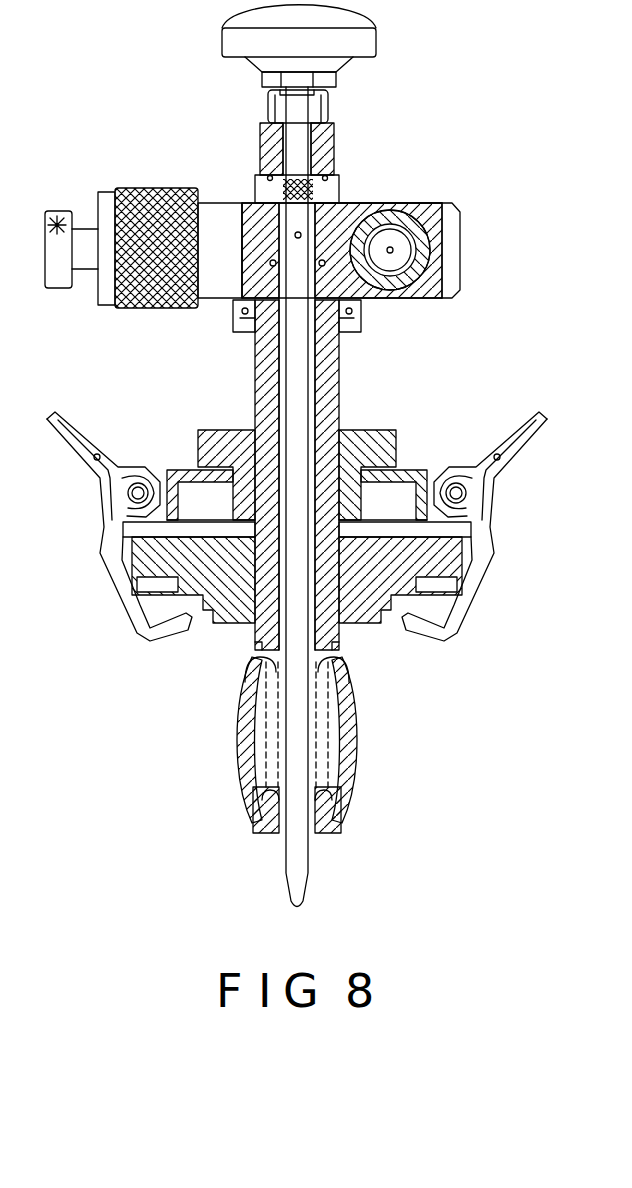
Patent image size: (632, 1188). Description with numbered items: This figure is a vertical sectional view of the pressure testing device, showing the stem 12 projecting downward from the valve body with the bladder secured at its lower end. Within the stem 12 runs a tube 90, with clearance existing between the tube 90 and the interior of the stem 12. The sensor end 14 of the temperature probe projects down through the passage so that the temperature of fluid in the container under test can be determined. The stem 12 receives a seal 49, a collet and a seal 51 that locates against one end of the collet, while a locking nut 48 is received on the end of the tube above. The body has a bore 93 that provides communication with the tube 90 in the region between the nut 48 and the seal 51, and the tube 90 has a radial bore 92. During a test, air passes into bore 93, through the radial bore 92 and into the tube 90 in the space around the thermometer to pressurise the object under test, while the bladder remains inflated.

The locking nut 48 is at (280, 172).
The seal 51 is at (268, 245).
The bore 93 is at (338, 203).
The radial bore 92 is at (301, 237).
The seal 49 is at (357, 310).
The stem 12 is at (328, 405).
The tube 90 is at (312, 730).
The sensor end 14 is at (298, 862).